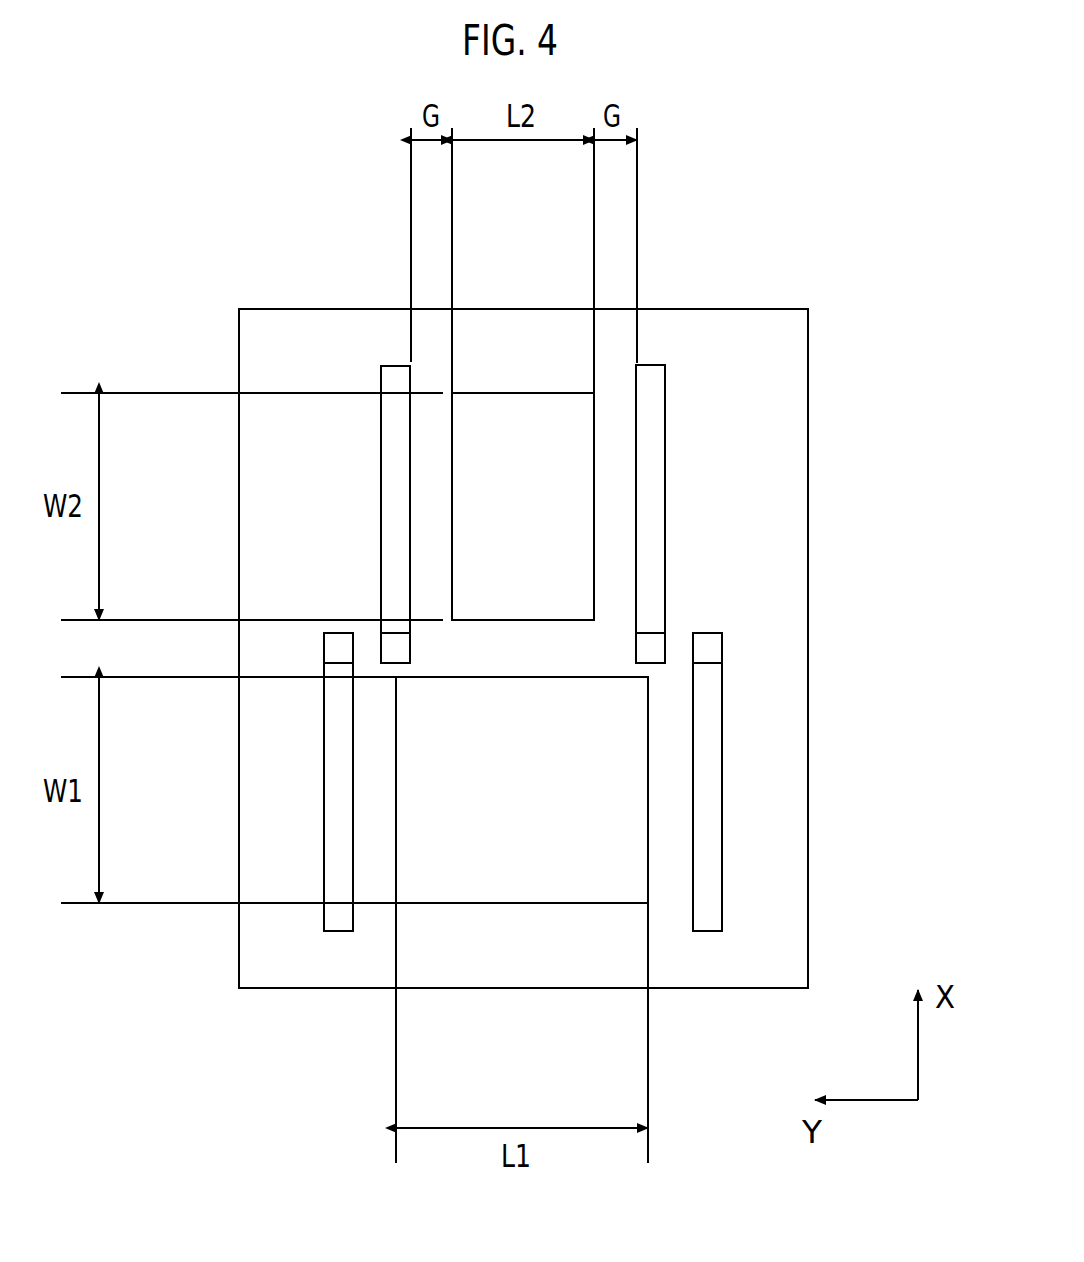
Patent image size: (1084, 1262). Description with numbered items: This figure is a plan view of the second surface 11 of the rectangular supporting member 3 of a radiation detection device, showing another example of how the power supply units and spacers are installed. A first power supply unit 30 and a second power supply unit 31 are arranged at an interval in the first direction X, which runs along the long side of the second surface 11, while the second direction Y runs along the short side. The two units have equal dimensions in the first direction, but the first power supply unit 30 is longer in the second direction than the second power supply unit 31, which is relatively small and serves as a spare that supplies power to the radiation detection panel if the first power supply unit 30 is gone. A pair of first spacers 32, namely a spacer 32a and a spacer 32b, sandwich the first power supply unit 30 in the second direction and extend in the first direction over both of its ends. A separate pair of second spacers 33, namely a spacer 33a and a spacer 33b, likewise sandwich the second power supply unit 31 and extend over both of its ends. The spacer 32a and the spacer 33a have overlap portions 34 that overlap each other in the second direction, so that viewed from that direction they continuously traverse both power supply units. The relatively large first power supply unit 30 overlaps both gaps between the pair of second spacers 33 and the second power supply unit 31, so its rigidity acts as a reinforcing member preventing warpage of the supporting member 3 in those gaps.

The supporting member 3 is at (814, 310).
The second surface 11 is at (788, 346).
The first power supply unit 30 is at (515, 872).
The second power supply unit 31 is at (521, 432).
The pair of first spacers 32 is at (738, 842).
The spacer 32a is at (713, 795).
The spacer 32b is at (330, 798).
The pair of second spacers 33 is at (680, 515).
The spacer 33a is at (655, 468).
The spacer 33b is at (395, 478).
The overlap portions 34 is at (338, 643).